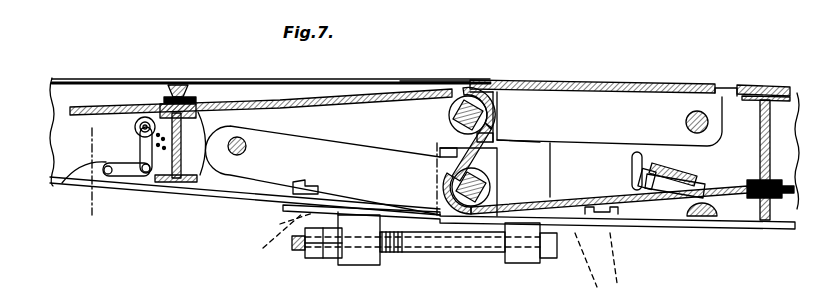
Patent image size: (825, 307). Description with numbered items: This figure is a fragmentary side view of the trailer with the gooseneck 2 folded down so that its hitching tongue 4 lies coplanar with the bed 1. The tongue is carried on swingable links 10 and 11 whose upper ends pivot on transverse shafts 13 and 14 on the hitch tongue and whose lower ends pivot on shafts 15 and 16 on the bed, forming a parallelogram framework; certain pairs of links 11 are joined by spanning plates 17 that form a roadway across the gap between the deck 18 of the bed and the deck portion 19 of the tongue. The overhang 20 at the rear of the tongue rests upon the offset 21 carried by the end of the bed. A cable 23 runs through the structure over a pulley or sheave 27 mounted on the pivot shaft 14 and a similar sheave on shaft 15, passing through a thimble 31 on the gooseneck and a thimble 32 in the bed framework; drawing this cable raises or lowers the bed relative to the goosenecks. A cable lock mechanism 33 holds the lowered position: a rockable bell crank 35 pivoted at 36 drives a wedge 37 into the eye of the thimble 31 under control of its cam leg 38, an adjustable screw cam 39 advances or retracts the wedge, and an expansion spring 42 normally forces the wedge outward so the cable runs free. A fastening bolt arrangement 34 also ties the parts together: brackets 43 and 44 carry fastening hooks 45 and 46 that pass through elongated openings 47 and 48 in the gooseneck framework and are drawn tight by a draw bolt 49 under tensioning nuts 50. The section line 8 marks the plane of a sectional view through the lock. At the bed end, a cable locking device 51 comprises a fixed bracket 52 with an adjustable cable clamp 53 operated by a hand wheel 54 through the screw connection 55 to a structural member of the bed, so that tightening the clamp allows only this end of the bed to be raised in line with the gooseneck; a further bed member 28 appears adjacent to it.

The bed 1 is at (726, 88).
The gooseneck 2 is at (170, 77).
The hitching tongue 4 is at (363, 115).
The section line 8 is at (112, 138).
The swingable link 10 is at (268, 200).
The swingable link 11 is at (591, 104).
The transverse shaft 13 is at (245, 143).
The transverse shaft 14 is at (490, 84).
The shaft 15 is at (497, 182).
The shaft 16 is at (690, 112).
The plate 17 is at (550, 82).
The deck 18 is at (779, 88).
The deck portion 19 is at (410, 80).
The overhang 20 is at (500, 140).
The offset 21 is at (443, 141).
The cable 23 is at (85, 107).
The pulley or sheave 27 is at (456, 87).
The member 28 is at (562, 150).
The thimble 31 is at (192, 99).
The thimble 32 is at (753, 180).
The cable lock mechanism 33 is at (137, 214).
The fastening bolt arrangement 34 is at (470, 258).
The bell crank 35 is at (125, 186).
The pivot 36 is at (147, 172).
The wedge 37 is at (183, 142).
The cam leg 38 is at (68, 182).
The adjustable screw cam 39 is at (127, 127).
The expansion spring 42 is at (164, 180).
The bracket 43 is at (543, 264).
The bracket 44 is at (356, 266).
The fastening hook 45 is at (606, 198).
The fastening hook 46 is at (368, 190).
The elongated opening 47 is at (603, 268).
The elongated opening 48 is at (277, 242).
The draw bolt 49 is at (412, 250).
The tensioning nut 50 is at (337, 260).
The cable locking device 51 is at (677, 210).
The fixed bracket 52 is at (714, 222).
The adjustable cable clamp 53 is at (690, 174).
The hand wheel 54 is at (630, 158).
The screw connection 55 is at (638, 192).